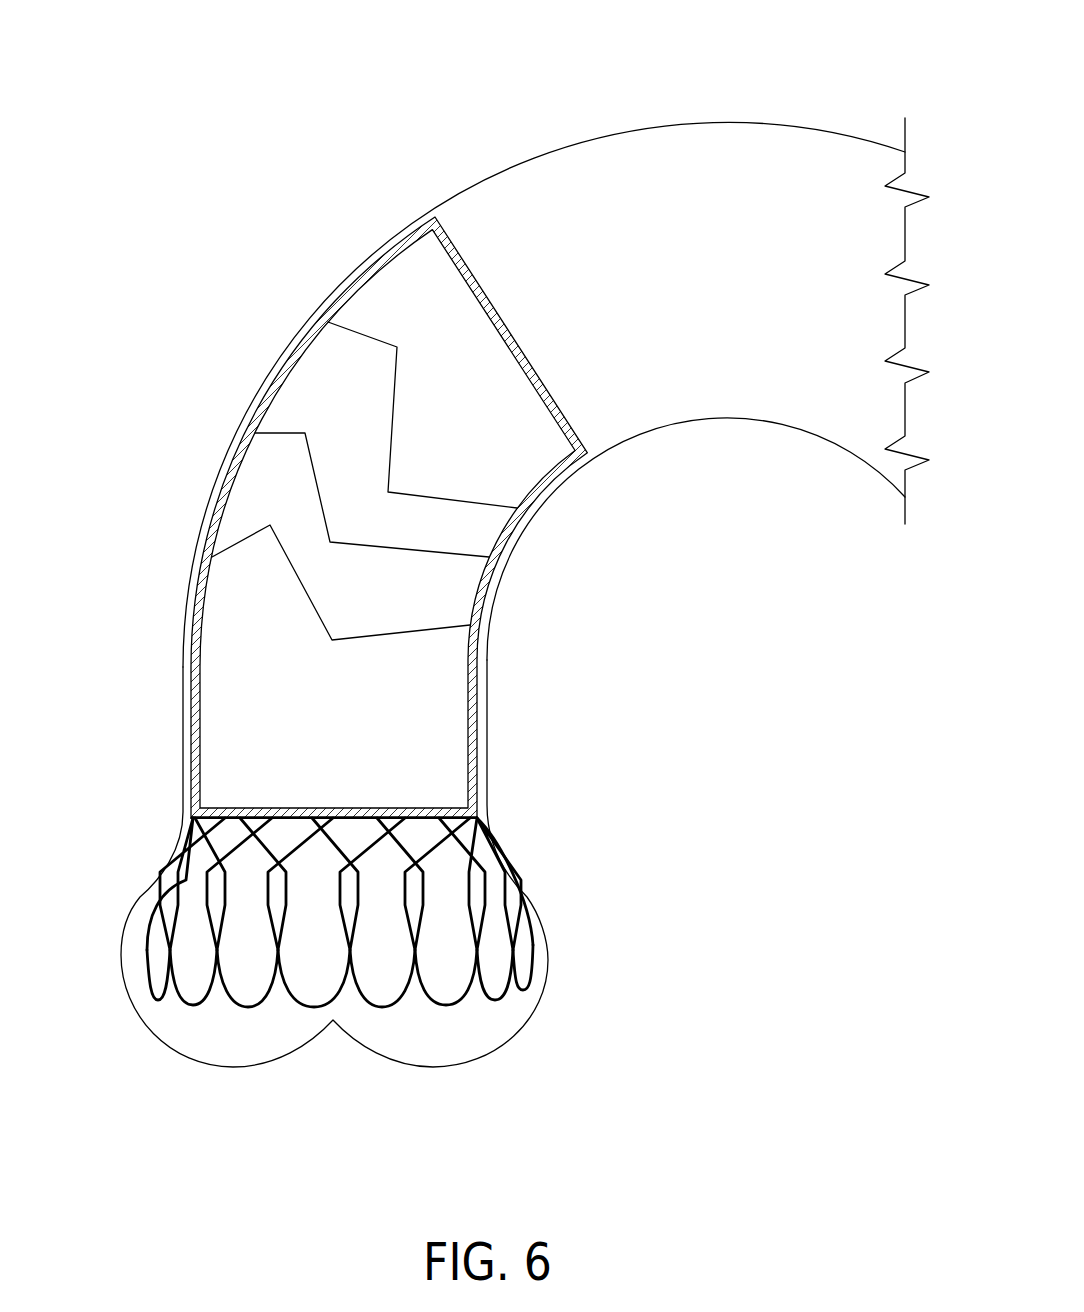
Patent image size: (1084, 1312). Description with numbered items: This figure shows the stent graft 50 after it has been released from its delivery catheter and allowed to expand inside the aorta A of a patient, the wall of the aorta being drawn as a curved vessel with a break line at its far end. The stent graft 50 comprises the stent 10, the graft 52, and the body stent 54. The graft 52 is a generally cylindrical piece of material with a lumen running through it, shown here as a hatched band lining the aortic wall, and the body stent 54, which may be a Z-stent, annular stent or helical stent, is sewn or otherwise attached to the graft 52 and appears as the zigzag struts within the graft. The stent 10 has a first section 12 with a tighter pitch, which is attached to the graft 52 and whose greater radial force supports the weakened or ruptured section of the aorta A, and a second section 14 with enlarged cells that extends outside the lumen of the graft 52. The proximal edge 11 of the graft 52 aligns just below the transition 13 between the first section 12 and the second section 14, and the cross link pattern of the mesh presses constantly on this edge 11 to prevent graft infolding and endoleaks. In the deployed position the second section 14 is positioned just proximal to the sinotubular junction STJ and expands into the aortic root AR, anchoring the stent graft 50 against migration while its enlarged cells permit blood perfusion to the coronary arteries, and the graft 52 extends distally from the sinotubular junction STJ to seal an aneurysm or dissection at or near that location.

The aorta A is at (674, 92).
The aortic root AR is at (510, 1065).
The sinotubular junction STJ is at (510, 820).
The stent 10 is at (523, 906).
The proximal edge of the graft 11 is at (478, 818).
The first section 12 is at (108, 654).
The transition 13 is at (480, 845).
The second section 14 is at (108, 824).
The stent graft 50 is at (137, 592).
The graft 52 is at (218, 523).
The body stent 54 is at (358, 334).